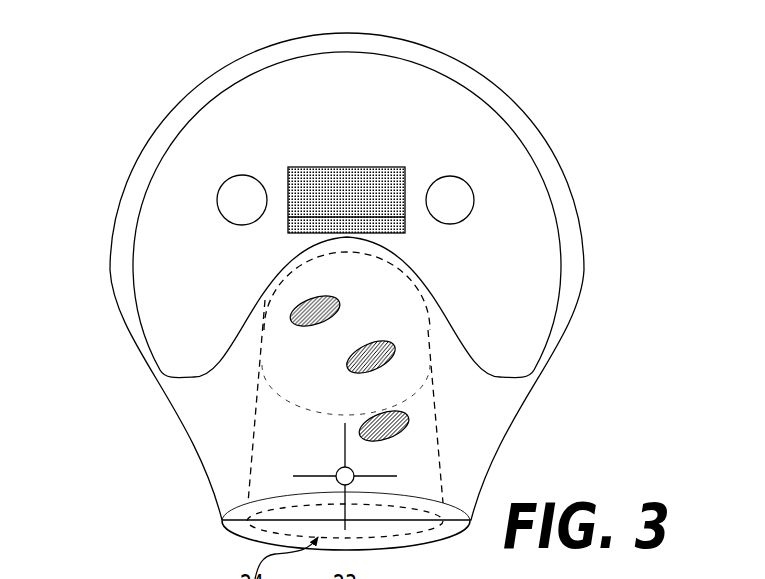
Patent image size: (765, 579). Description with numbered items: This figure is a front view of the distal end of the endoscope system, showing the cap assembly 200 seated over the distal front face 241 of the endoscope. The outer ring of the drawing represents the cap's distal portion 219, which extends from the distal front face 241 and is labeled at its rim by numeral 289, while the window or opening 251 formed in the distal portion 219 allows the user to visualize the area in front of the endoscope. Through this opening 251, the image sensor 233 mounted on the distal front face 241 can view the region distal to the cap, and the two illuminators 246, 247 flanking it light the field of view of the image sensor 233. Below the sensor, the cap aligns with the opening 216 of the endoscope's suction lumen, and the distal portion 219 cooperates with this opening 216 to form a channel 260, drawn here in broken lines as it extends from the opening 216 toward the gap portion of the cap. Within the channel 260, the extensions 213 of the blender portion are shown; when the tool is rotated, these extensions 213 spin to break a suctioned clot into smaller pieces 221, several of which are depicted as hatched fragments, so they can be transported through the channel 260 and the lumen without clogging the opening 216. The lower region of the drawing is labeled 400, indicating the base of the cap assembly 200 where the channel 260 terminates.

The cap assembly 200 is at (621, 142).
The outer shell 289 is at (488, 76).
The distal portion 219 is at (568, 272).
The distal front face 241 is at (526, 247).
The opening 251 is at (518, 184).
The image sensor 233 is at (375, 167).
The illuminator 247 is at (227, 182).
The illuminator 246 is at (456, 177).
The opening 216 is at (281, 288).
The channel 260 is at (282, 444).
The smaller pieces 221 is at (296, 307).
The extensions 213 is at (345, 452).
The base member 400 is at (113, 567).